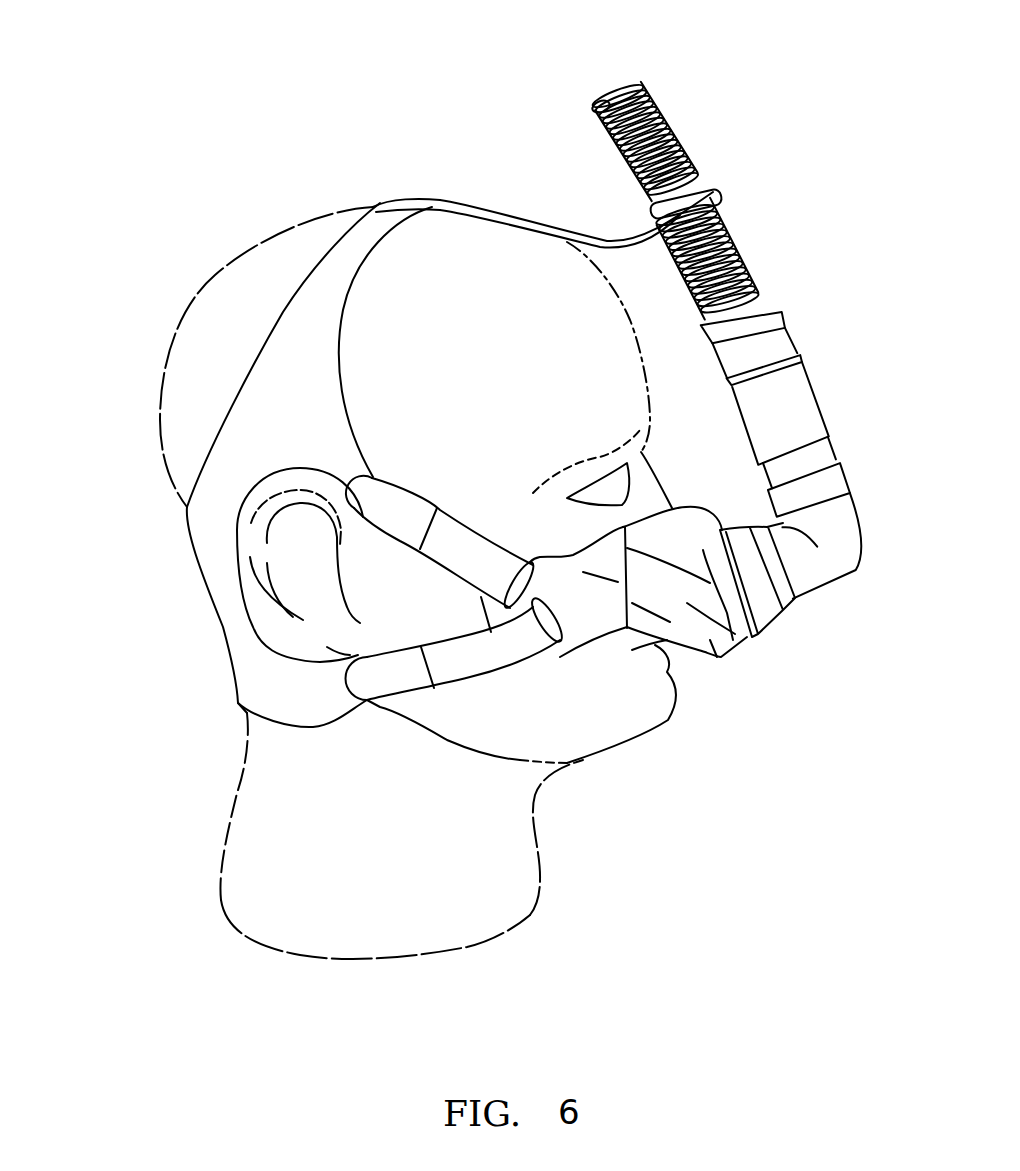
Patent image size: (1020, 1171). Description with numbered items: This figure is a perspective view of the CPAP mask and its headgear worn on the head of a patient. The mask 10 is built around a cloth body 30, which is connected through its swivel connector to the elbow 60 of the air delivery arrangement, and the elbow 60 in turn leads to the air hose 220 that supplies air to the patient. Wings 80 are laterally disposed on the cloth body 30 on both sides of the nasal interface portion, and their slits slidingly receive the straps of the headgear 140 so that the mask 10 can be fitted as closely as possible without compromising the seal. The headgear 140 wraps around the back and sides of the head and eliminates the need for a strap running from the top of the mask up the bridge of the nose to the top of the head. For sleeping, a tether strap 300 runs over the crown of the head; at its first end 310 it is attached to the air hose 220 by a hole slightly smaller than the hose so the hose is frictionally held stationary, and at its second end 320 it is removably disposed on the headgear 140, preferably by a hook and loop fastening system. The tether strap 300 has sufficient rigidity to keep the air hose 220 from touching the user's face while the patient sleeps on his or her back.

The mask 10 is at (765, 650).
The cloth body 30 is at (703, 633).
The elbow 60 is at (843, 560).
The wings 80 is at (590, 623).
The headgear 140 is at (310, 310).
The air hose 220 is at (720, 220).
The tether strap 300 is at (527, 227).
The first end 310 is at (710, 187).
The second end 320 is at (380, 207).